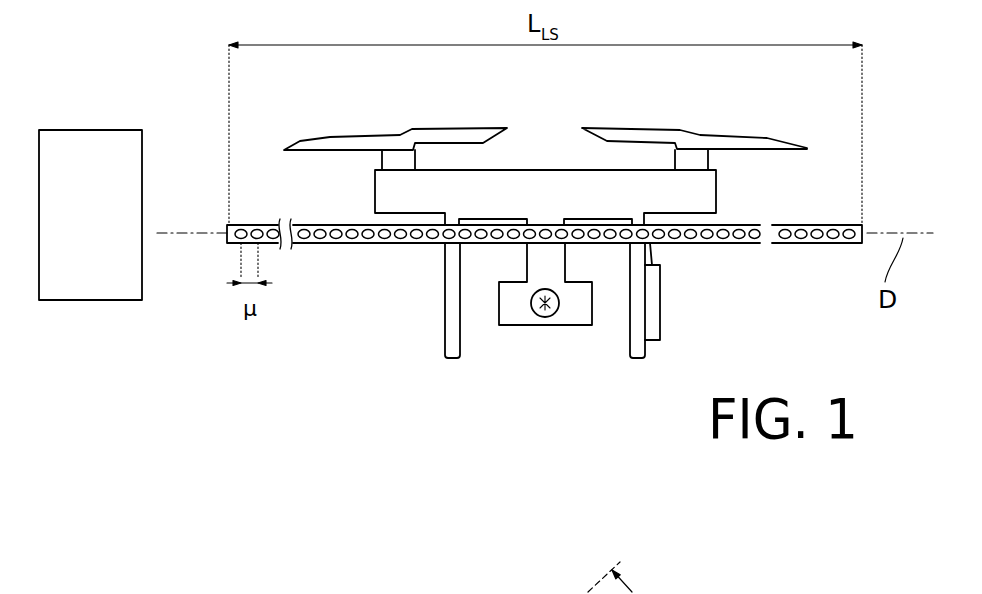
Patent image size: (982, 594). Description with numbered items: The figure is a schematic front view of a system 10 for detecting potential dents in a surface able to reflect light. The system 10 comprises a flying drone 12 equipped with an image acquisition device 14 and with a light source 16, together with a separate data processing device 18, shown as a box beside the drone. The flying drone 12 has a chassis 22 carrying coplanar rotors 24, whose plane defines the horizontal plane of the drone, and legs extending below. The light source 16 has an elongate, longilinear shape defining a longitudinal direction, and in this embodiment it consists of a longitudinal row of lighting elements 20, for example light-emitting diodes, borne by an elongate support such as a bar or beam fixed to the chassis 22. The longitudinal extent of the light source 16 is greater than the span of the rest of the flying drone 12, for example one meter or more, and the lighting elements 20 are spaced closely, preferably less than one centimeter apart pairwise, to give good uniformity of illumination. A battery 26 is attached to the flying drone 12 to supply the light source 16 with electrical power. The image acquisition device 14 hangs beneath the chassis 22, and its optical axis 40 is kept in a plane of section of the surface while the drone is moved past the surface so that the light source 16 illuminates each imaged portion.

The system 10 is at (167, 343).
The flying drone 12 is at (430, 300).
The image acquisition device 14 is at (572, 325).
The light source 16 is at (727, 243).
The data processing device 18 is at (93, 142).
The lighting elements 20 is at (800, 243).
The chassis 22 is at (673, 192).
The rotors 24 is at (363, 141).
The battery 26 is at (660, 283).
The optical axis 40 is at (545, 303).